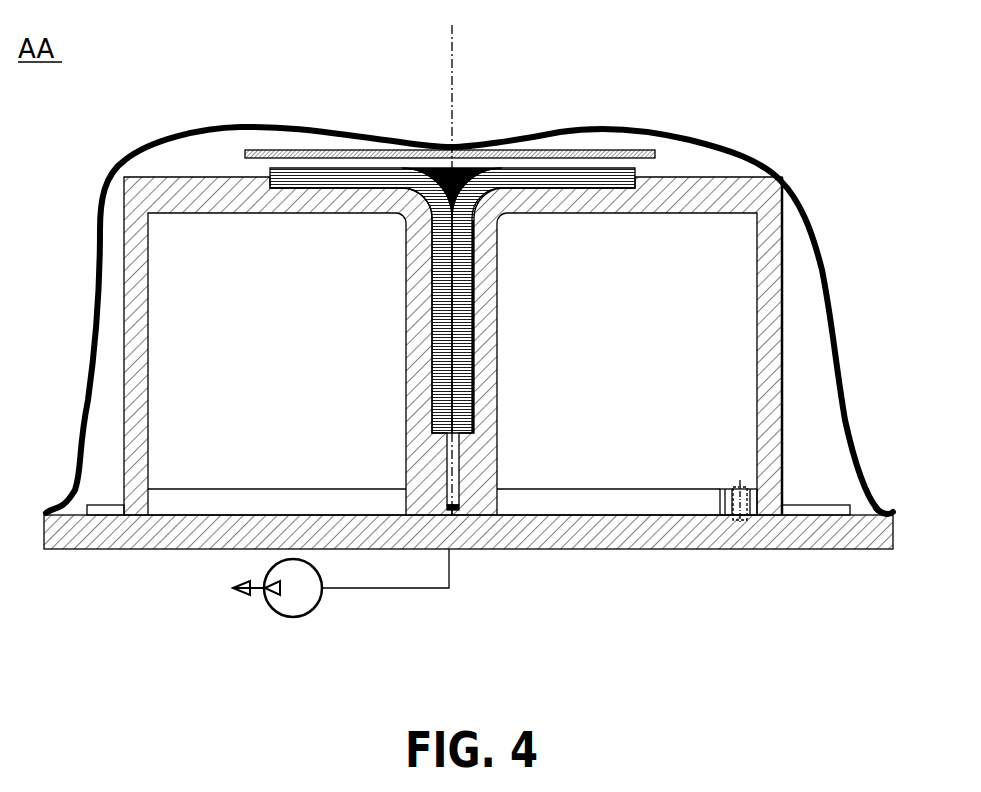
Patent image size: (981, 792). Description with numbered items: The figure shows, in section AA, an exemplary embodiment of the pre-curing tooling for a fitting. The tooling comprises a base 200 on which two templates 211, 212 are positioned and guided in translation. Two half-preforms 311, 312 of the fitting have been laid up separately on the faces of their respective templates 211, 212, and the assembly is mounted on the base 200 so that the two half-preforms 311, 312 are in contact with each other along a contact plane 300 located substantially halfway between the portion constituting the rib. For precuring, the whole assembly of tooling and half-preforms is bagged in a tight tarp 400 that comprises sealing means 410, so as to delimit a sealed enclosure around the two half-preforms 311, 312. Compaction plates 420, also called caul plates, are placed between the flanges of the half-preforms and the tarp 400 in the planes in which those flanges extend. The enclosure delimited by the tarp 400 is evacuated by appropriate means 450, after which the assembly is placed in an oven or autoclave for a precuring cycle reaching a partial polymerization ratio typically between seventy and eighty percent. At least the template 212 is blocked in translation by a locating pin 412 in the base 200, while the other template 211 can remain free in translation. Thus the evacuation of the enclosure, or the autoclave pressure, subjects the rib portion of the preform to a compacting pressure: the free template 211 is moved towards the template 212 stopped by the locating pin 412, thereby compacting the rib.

The base 200 is at (546, 549).
The template 211 is at (193, 175).
The template 212 is at (715, 175).
The contact plane 300 is at (452, 68).
The half-preform 311 is at (578, 178).
The half-preform 312 is at (318, 178).
The tight tarp 400 is at (828, 242).
The sealing means 410 is at (880, 508).
The locating pin 412 is at (742, 488).
The compaction plates 420 is at (450, 148).
The means for evacuating 450 is at (293, 617).